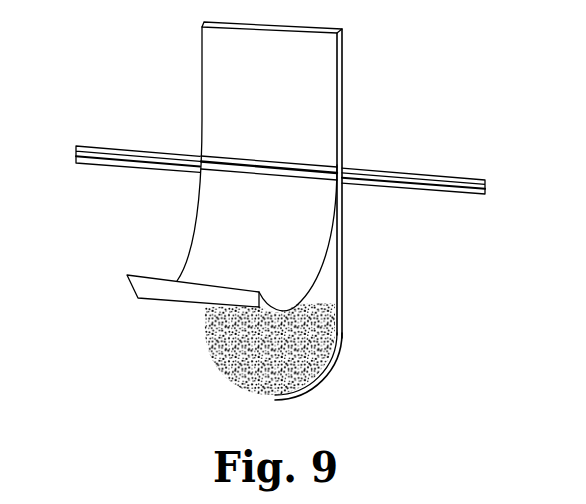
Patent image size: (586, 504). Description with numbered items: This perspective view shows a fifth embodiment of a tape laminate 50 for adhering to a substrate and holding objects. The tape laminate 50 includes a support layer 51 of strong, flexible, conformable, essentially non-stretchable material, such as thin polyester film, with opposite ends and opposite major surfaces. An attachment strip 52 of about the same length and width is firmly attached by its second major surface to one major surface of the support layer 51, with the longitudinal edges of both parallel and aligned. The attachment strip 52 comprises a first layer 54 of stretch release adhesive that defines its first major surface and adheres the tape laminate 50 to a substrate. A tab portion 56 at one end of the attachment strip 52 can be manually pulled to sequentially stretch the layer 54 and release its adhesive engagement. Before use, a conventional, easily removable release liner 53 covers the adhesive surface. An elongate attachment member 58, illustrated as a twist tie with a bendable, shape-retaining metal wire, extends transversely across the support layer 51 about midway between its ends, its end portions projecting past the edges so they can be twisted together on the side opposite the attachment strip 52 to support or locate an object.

The tape laminate 50 is at (280, 214).
The support layer 51 is at (338, 96).
The attachment strip 52 is at (343, 252).
The release liner 53 is at (220, 245).
The first layer of stretch release adhesive 54 is at (325, 288).
The tab portion 56 is at (303, 367).
The attachment member 58 is at (408, 177).